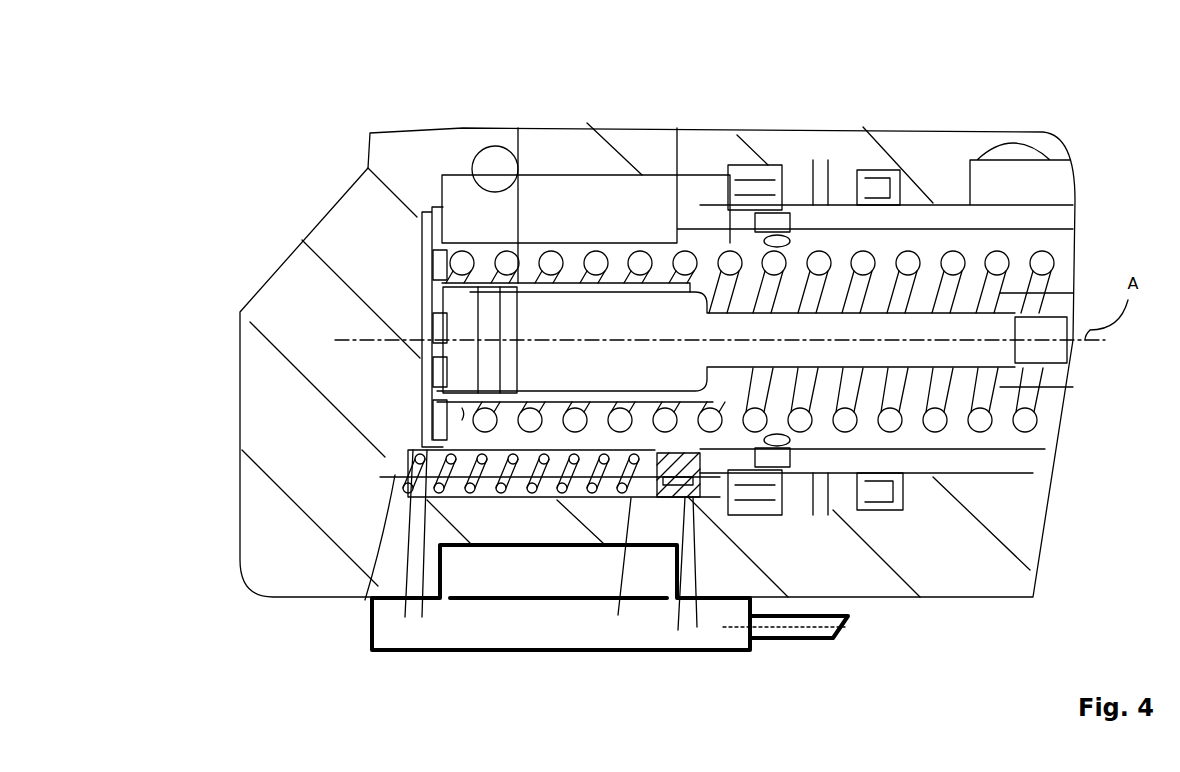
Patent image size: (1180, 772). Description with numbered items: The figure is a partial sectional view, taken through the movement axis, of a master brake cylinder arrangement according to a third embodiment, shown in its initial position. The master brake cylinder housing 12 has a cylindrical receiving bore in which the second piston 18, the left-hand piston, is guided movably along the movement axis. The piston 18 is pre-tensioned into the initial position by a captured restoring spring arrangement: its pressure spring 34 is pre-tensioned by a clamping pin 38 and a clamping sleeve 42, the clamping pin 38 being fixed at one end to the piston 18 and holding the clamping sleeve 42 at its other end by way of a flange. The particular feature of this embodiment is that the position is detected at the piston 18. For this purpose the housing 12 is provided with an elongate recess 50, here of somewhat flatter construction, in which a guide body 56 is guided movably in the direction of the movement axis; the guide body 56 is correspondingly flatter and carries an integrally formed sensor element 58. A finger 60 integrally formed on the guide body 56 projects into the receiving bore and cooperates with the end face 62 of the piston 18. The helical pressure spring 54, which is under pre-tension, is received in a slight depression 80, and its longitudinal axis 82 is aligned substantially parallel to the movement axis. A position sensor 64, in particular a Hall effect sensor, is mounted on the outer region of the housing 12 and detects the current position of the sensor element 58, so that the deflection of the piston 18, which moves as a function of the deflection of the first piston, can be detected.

The master brake cylinder housing 12 is at (567, 138).
The second piston 18 is at (863, 175).
The pressure spring 34 is at (803, 205).
The clamping pin 38 is at (740, 323).
The clamping sleeve 42 is at (518, 138).
The recess 50 is at (427, 450).
The helical pressure spring 54 is at (405, 617).
The guide body 56 is at (678, 630).
The sensor element 58 is at (698, 645).
The finger 60 is at (618, 615).
The end face 62 is at (672, 243).
The position sensor 64 is at (480, 617).
The depression 80 is at (408, 453).
The longitudinal axis 82 is at (370, 602).